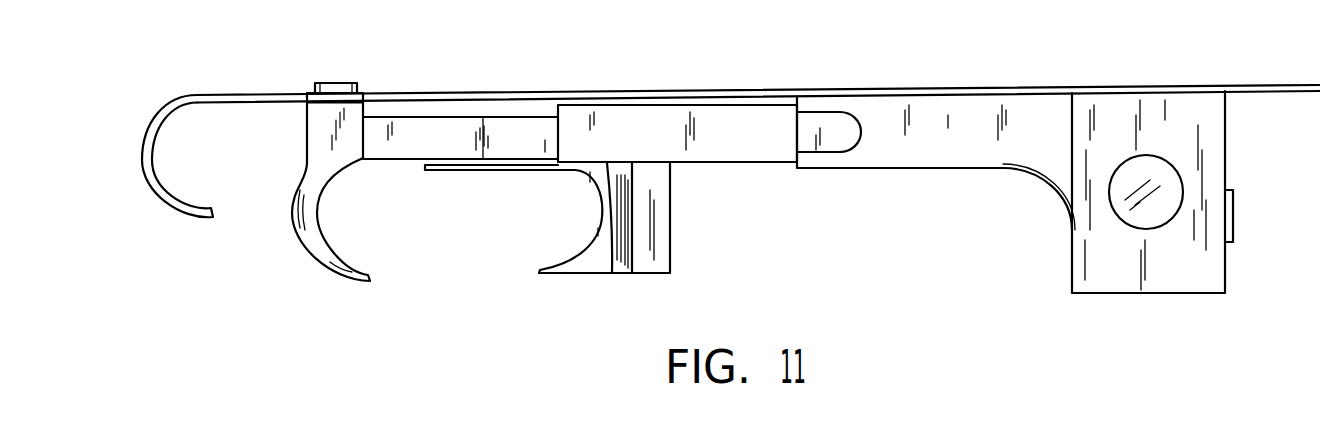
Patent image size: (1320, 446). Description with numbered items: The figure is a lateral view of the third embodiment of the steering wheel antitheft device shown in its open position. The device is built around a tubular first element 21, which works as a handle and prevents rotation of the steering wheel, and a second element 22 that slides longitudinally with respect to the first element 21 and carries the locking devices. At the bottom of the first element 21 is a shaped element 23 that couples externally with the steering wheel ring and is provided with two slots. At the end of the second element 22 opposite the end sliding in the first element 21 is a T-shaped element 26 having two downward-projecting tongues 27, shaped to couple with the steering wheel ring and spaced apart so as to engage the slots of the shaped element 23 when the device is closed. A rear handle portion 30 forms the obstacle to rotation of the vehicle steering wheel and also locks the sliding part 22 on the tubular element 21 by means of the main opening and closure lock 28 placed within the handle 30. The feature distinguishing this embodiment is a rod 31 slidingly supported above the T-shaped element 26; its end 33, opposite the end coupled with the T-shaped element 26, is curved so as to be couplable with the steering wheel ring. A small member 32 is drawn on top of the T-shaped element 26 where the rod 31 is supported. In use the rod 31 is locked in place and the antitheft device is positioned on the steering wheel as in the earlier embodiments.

The first element 21 is at (779, 152).
The second element 22 is at (415, 145).
The shaped element 23 is at (591, 262).
The T-shaped element 26 is at (320, 145).
The tongues 27 is at (317, 253).
The opening and closure lock 28 is at (1234, 203).
The rear handle portion 30 is at (975, 153).
The rod 31 is at (504, 96).
The set screw 32 is at (333, 88).
The curved end 33 is at (167, 201).